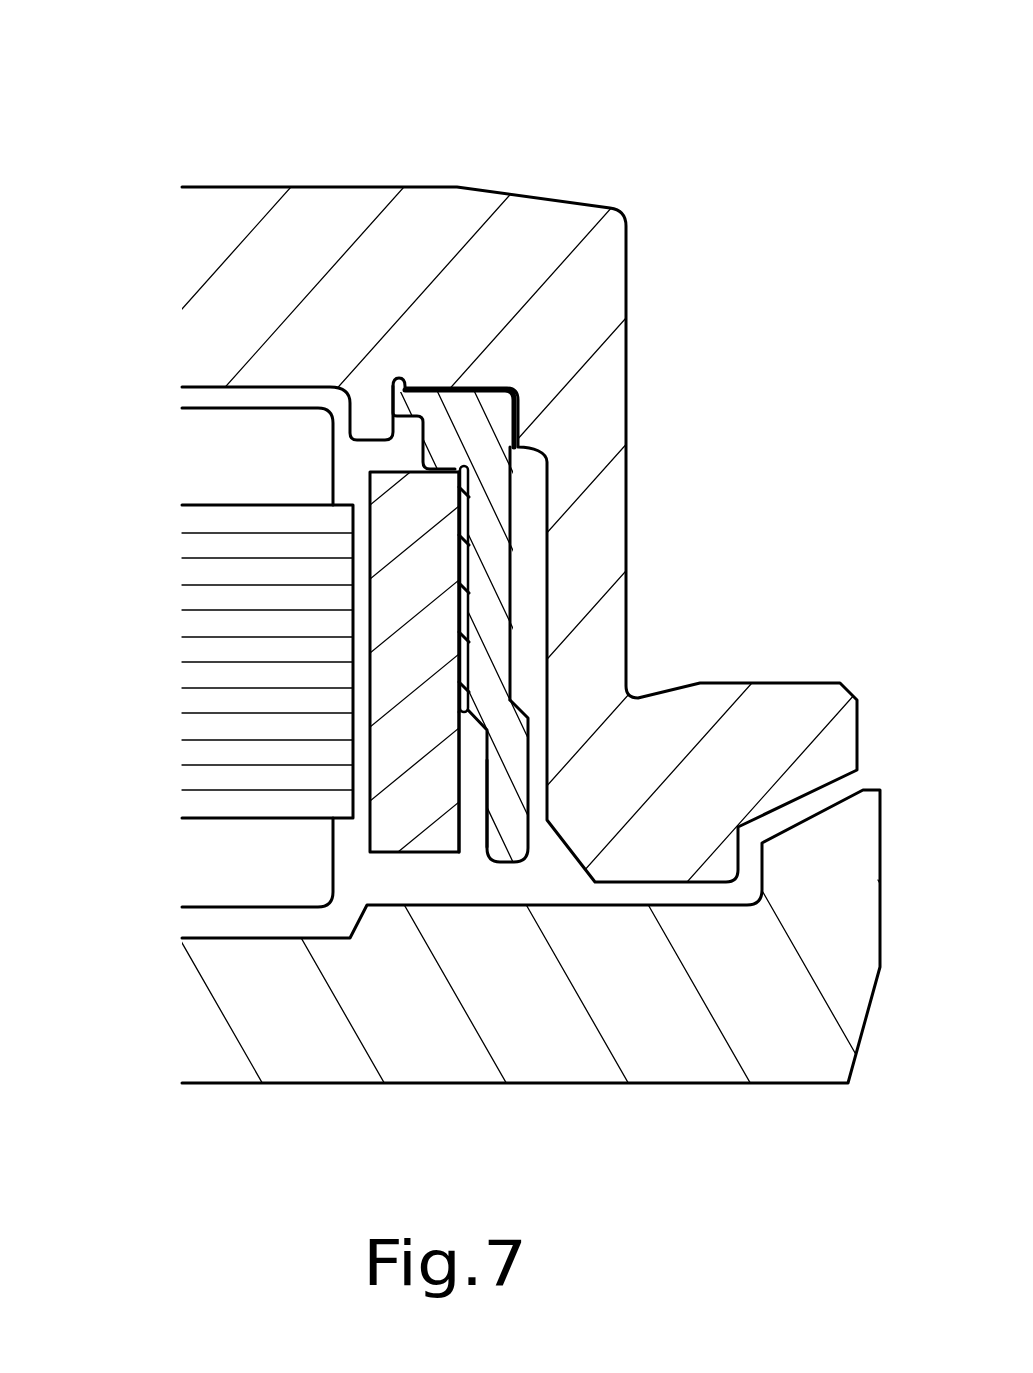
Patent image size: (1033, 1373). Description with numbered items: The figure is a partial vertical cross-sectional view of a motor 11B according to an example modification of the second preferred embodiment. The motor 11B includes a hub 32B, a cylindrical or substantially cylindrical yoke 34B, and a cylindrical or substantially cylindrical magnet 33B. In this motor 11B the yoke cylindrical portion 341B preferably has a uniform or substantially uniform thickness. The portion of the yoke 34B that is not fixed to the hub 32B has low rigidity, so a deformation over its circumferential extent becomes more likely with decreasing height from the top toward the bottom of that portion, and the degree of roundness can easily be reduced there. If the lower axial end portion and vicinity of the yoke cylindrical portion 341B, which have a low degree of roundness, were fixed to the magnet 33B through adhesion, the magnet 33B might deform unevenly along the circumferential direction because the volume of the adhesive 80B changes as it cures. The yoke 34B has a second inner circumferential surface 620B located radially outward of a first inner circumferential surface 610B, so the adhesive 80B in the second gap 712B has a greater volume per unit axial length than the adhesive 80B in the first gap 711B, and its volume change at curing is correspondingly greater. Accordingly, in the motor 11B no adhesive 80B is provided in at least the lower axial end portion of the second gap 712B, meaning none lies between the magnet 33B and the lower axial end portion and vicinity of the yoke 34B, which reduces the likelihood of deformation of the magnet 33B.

The motor 11B is at (607, 115).
The hub 32B is at (605, 300).
The magnet 33B is at (393, 518).
The yoke 34B is at (512, 877).
The yoke cylindrical portion 341B is at (520, 612).
The adhesive 80B is at (462, 470).
The first inner circumferential surface 610B is at (463, 600).
The first gap 711B is at (458, 651).
The second gap 712B is at (458, 804).
The second inner circumferential surface 620B is at (479, 795).